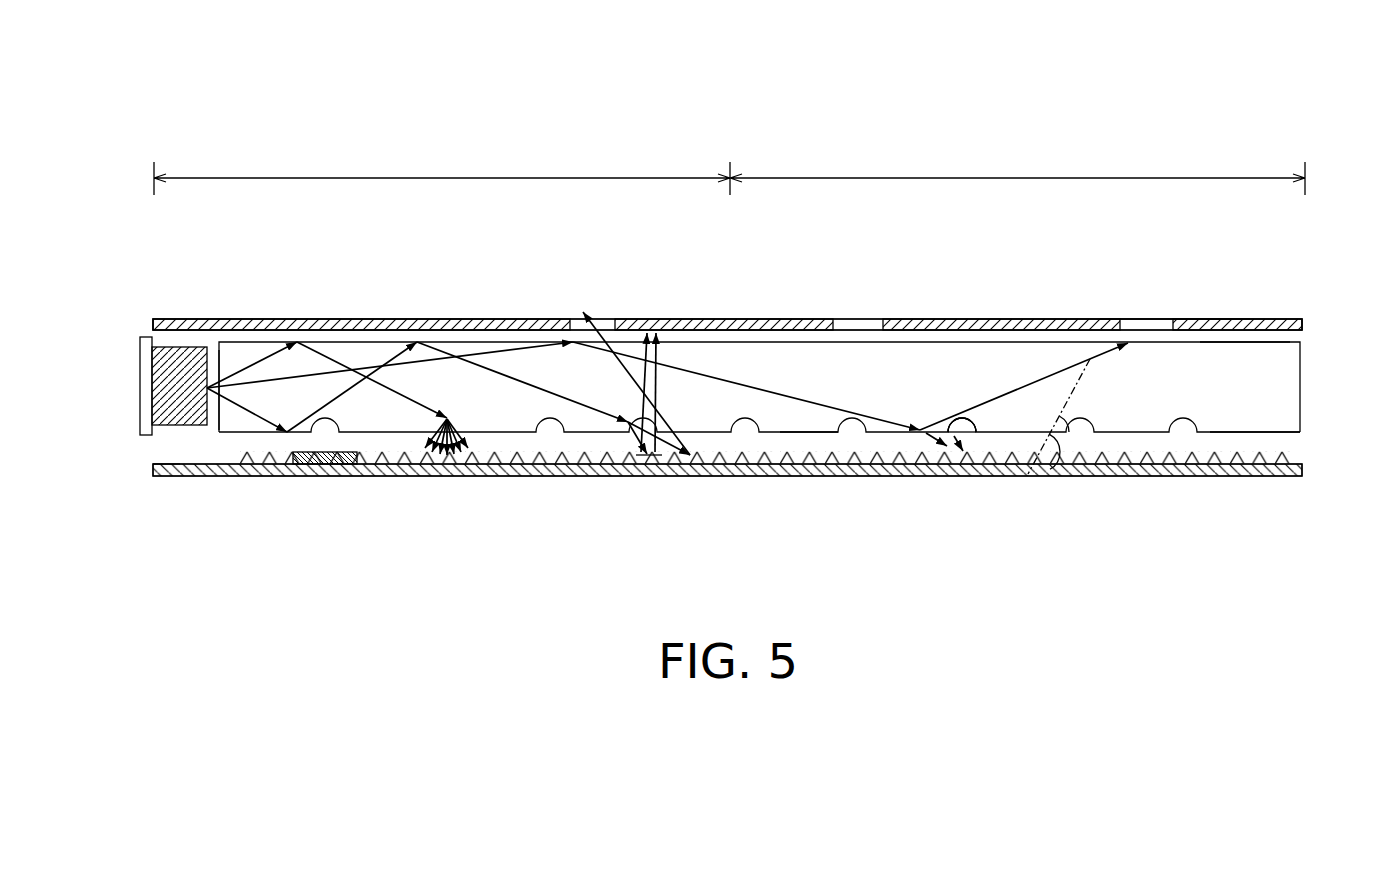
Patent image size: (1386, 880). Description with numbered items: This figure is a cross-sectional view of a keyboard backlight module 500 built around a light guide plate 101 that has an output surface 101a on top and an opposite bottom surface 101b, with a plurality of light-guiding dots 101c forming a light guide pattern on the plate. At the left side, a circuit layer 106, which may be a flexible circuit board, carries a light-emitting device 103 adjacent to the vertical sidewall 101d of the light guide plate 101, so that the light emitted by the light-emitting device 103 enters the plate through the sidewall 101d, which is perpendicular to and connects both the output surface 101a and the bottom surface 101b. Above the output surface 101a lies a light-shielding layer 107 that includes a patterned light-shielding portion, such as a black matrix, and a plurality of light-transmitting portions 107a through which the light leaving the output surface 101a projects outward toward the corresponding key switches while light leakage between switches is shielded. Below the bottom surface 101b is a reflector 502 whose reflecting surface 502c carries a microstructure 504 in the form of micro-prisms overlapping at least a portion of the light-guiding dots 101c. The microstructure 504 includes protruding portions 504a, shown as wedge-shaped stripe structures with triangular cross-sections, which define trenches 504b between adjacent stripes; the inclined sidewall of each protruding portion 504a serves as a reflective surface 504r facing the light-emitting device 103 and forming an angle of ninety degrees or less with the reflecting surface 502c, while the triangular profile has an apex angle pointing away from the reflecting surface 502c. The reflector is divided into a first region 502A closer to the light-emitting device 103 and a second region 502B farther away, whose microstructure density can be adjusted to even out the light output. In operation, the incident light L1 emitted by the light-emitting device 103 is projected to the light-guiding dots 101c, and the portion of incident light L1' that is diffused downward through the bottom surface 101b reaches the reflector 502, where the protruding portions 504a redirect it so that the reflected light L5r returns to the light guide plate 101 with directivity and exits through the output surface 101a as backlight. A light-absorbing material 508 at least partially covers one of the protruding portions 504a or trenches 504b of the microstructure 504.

The keyboard backlight module 500 is at (122, 63).
The first region 502A is at (442, 169).
The second region 502B is at (1017, 170).
The light-shielding layer 107 is at (1303, 324).
The light-transmitting portion 107a is at (1151, 316).
The light guide plate 101 is at (1285, 386).
The output surface 101a is at (1238, 339).
The bottom surface 101b is at (1266, 435).
The light-guiding dot 101c is at (836, 413).
The sidewall 101d is at (212, 425).
The circuit layer 106 is at (140, 381).
The light-emitting device 103 is at (185, 350).
The reflector 502 is at (258, 474).
The reflecting surface 502c is at (169, 461).
The light-absorbing material 508 is at (330, 466).
The incident light L1 is at (667, 437).
The portion of incident light diffused downward L1' is at (543, 439).
The reflected light L5r is at (660, 380).
The microstructure 504 is at (1052, 553).
The protruding portion 504a is at (966, 431).
The trench 504b is at (936, 419).
The reflective surface 504r is at (970, 432).